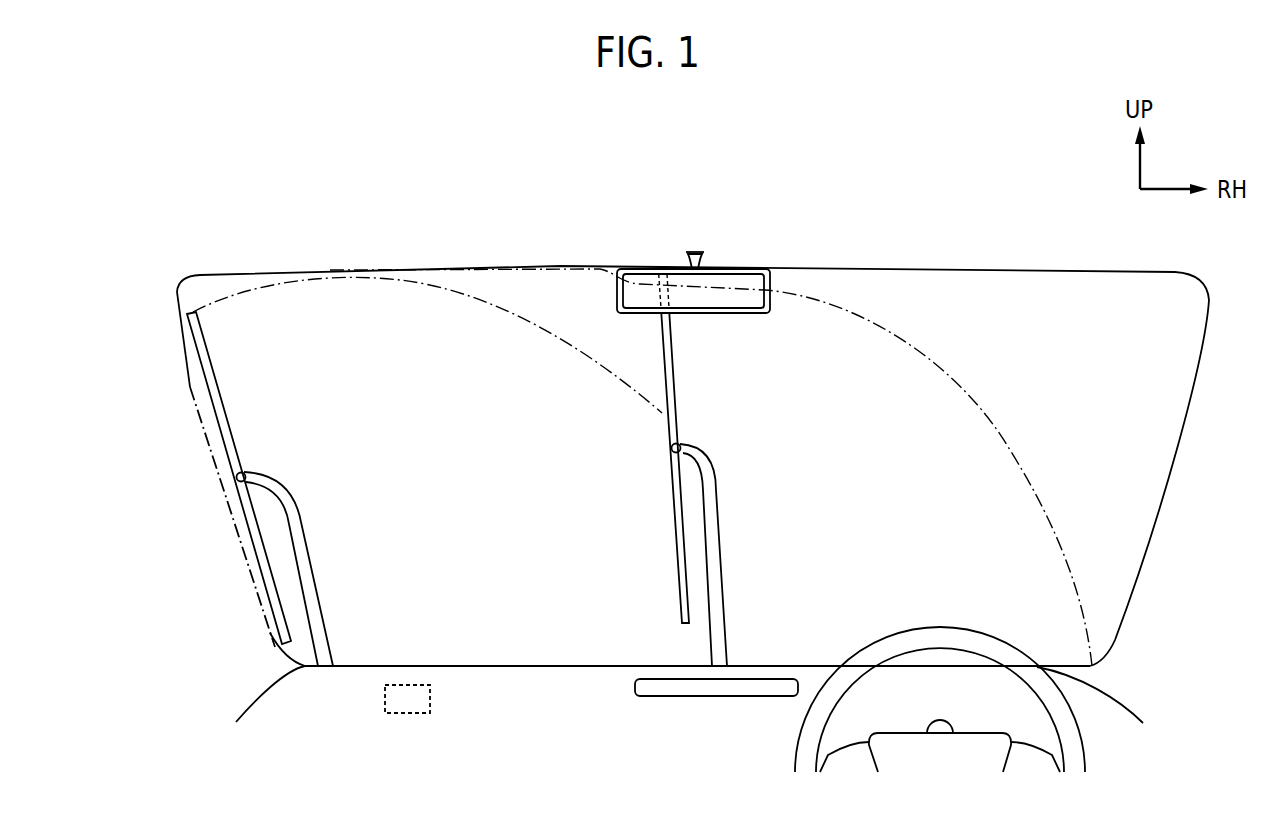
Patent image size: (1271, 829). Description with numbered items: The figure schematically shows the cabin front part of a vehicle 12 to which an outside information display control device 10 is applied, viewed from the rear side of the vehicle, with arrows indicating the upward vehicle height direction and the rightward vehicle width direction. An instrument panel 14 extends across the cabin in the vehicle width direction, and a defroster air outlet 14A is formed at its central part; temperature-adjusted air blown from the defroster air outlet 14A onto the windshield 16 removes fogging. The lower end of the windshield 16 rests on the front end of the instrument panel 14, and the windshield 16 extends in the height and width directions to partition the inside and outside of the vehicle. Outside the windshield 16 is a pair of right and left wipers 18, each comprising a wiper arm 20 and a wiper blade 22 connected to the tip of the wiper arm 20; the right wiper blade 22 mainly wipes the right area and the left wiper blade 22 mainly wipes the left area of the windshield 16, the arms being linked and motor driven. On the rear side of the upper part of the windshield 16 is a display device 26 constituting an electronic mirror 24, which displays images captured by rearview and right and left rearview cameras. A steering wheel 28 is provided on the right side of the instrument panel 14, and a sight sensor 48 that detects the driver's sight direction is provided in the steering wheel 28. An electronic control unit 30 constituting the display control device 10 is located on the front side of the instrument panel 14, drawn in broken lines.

The outside information display control device 10 is at (407, 699).
The vehicle 12 is at (950, 226).
The instrument panel 14 is at (491, 668).
The defroster air outlet 14A is at (690, 690).
The windshield 16 is at (532, 263).
The wiper 18 is at (110, 457).
The wiper arm 20 is at (283, 517).
The wiper blade 22 is at (203, 386).
The electronic mirror 24 is at (693, 282).
The display device 26 is at (770, 293).
The steering wheel 28 is at (1068, 703).
The electronic control unit (ECU) 30 is at (420, 714).
The sight sensor 48 is at (945, 720).